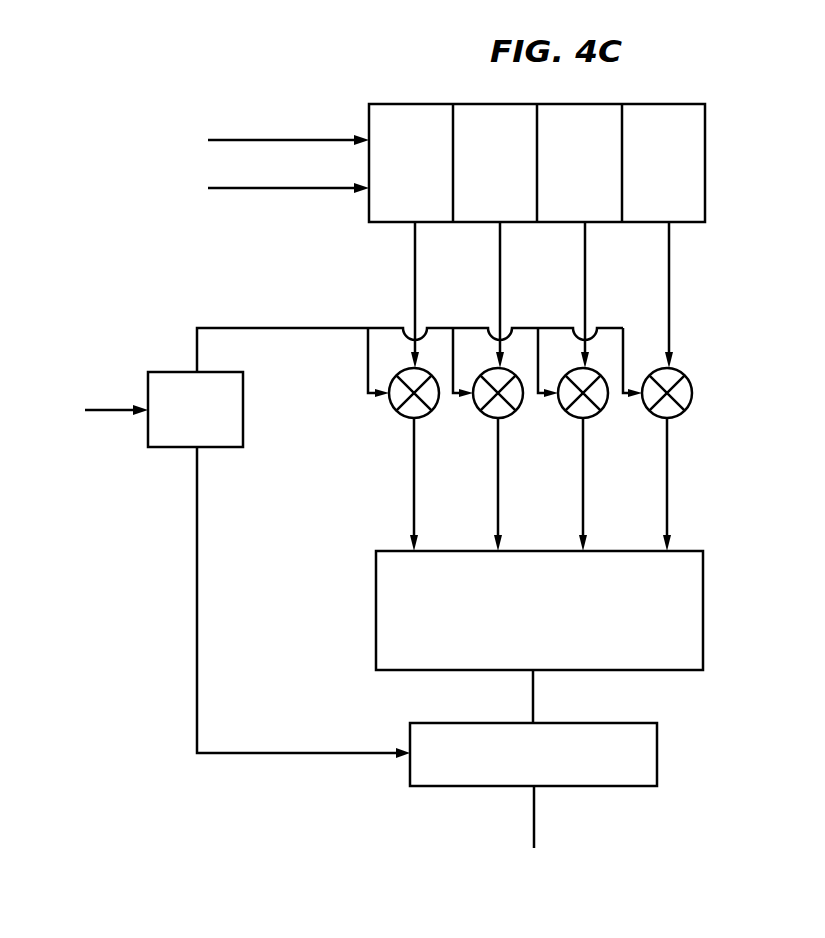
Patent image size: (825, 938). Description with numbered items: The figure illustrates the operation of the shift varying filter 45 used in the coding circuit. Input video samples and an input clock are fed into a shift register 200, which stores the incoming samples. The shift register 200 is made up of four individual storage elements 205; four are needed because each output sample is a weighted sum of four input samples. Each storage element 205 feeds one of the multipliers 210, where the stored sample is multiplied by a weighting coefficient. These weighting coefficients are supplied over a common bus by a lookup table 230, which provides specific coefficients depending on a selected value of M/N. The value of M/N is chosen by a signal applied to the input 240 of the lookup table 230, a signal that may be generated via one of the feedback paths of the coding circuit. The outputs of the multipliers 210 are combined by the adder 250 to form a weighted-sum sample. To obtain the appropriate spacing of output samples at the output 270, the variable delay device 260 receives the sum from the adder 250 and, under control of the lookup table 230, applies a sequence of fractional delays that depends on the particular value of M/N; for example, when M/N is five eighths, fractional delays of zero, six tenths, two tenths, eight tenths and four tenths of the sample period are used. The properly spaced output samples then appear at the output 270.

The shift varying filter 45 is at (176, 792).
The shift register 200 is at (690, 104).
The storage element 205 is at (482, 104).
The multiplier 210 is at (692, 380).
The lookup table 230 is at (243, 428).
The input of the lookup table 240 is at (112, 413).
The adder 250 is at (703, 597).
The variable delay device 260 is at (410, 772).
The output 270 is at (537, 813).